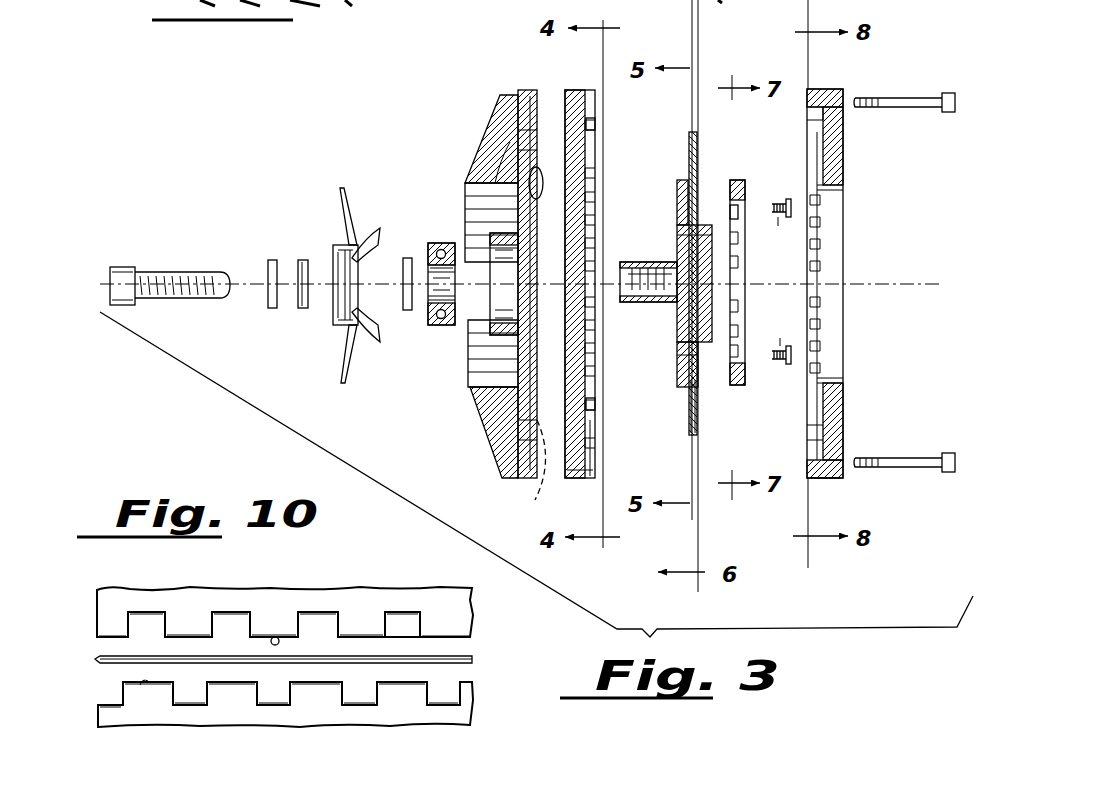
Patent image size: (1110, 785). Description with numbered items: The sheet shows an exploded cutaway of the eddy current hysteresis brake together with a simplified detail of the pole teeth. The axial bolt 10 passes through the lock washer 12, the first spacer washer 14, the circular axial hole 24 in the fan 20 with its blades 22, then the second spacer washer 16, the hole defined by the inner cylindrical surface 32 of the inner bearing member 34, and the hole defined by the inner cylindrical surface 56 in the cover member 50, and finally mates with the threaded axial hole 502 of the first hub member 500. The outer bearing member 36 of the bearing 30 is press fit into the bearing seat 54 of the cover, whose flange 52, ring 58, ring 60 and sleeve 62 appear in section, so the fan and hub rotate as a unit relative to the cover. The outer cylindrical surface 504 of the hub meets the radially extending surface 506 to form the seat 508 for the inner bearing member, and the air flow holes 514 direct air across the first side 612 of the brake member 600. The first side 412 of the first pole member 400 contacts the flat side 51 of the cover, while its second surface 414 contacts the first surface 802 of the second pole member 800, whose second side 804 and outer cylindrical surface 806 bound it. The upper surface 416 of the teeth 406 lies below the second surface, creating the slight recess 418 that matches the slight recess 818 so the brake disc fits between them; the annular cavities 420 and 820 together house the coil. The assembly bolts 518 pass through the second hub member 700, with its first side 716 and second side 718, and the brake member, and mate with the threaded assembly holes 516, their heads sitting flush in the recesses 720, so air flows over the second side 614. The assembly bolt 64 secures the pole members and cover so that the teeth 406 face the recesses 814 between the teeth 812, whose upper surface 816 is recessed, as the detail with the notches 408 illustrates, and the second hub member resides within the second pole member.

In FIG. 3, the axial bolt 10 is at (118, 268).
In FIG. 3, the lock washer 12 is at (271, 262).
In FIG. 3, the first spacer washer 14 is at (303, 262).
In FIG. 3, the second spacer washer 16 is at (405, 300).
In FIG. 3, the fan 20 is at (334, 282).
In FIG. 3, the fan blade 22 is at (367, 232).
In FIG. 3, the circular axial hole 24 is at (350, 285).
In FIG. 3, the bearing 30 is at (433, 238).
In FIG. 3, the inner cylindrical surface 32 is at (430, 300).
In FIG. 3, the inner bearing member 34 is at (428, 262).
In FIG. 3, the outer bearing member 36 is at (428, 245).
In FIG. 3, the cover member 50 is at (490, 283).
In FIG. 3, the flat side 51 is at (538, 128).
In FIG. 3, the pulley flange 52 is at (490, 128).
In FIG. 3, the bearing seat 54 is at (470, 340).
In FIG. 3, the inner cylindrical surface 56 is at (490, 236).
In FIG. 3, the snap ring 58 is at (528, 170).
In FIG. 3, the ring 60 is at (510, 142).
In FIG. 3, the pulley sleeve 62 is at (535, 95).
In FIG. 3, the assembly bolt 64 is at (926, 96).
In FIG. 3, the first pole member 400 is at (603, 282).
In FIG. 10, the first pole member 400 is at (272, 593).
In FIG. 10, the teeth 406 is at (192, 628).
In FIG. 10, the notch 408 is at (147, 625).
In FIG. 3, the first side 412 is at (570, 480).
In FIG. 3, the second surface 414 is at (597, 445).
In FIG. 3, the upper surface 416 is at (596, 156).
In FIG. 10, the upper surface 416 is at (97, 636).
In FIG. 3, the slight recess 418 is at (597, 420).
In FIG. 3, the annular cavity 420 is at (597, 124).
In FIG. 3, the first hub member 500 is at (657, 275).
In FIG. 3, the threaded axial hole 502 is at (638, 302).
In FIG. 3, the outer cylindrical surface 504 is at (645, 248).
In FIG. 3, the radially extending surface 506 is at (676, 357).
In FIG. 3, the seat 508 is at (662, 232).
In FIG. 3, the air flow hole 514 is at (676, 200).
In FIG. 3, the threaded assembly hole 516 is at (676, 360).
In FIG. 3, the assembly bolt 518 is at (780, 216).
In FIG. 3, the brake member 600 is at (708, 324).
In FIG. 10, the brake member 600 is at (474, 659).
In FIG. 3, the first side 612 is at (689, 420).
In FIG. 3, the second side 614 is at (702, 440).
In FIG. 3, the second hub member 700 is at (767, 272).
In FIG. 3, the first side 716 is at (728, 195).
In FIG. 3, the second side 718 is at (746, 262).
In FIG. 3, the recess 720 is at (752, 206).
In FIG. 3, the second pole member 800 is at (822, 281).
In FIG. 10, the second pole member 800 is at (313, 724).
In FIG. 3, the first side 802 is at (808, 445).
In FIG. 3, the second side 804 is at (844, 432).
In FIG. 3, the outer cylindrical surface 806 is at (828, 480).
In FIG. 10, the teeth 812 is at (150, 692).
In FIG. 10, the recess 814 is at (358, 692).
In FIG. 3, the upper surface 816 is at (822, 270).
In FIG. 10, the upper surface 816 is at (140, 688).
In FIG. 3, the slight recess 818 is at (830, 140).
In FIG. 3, the annular cavity 820 is at (808, 432).